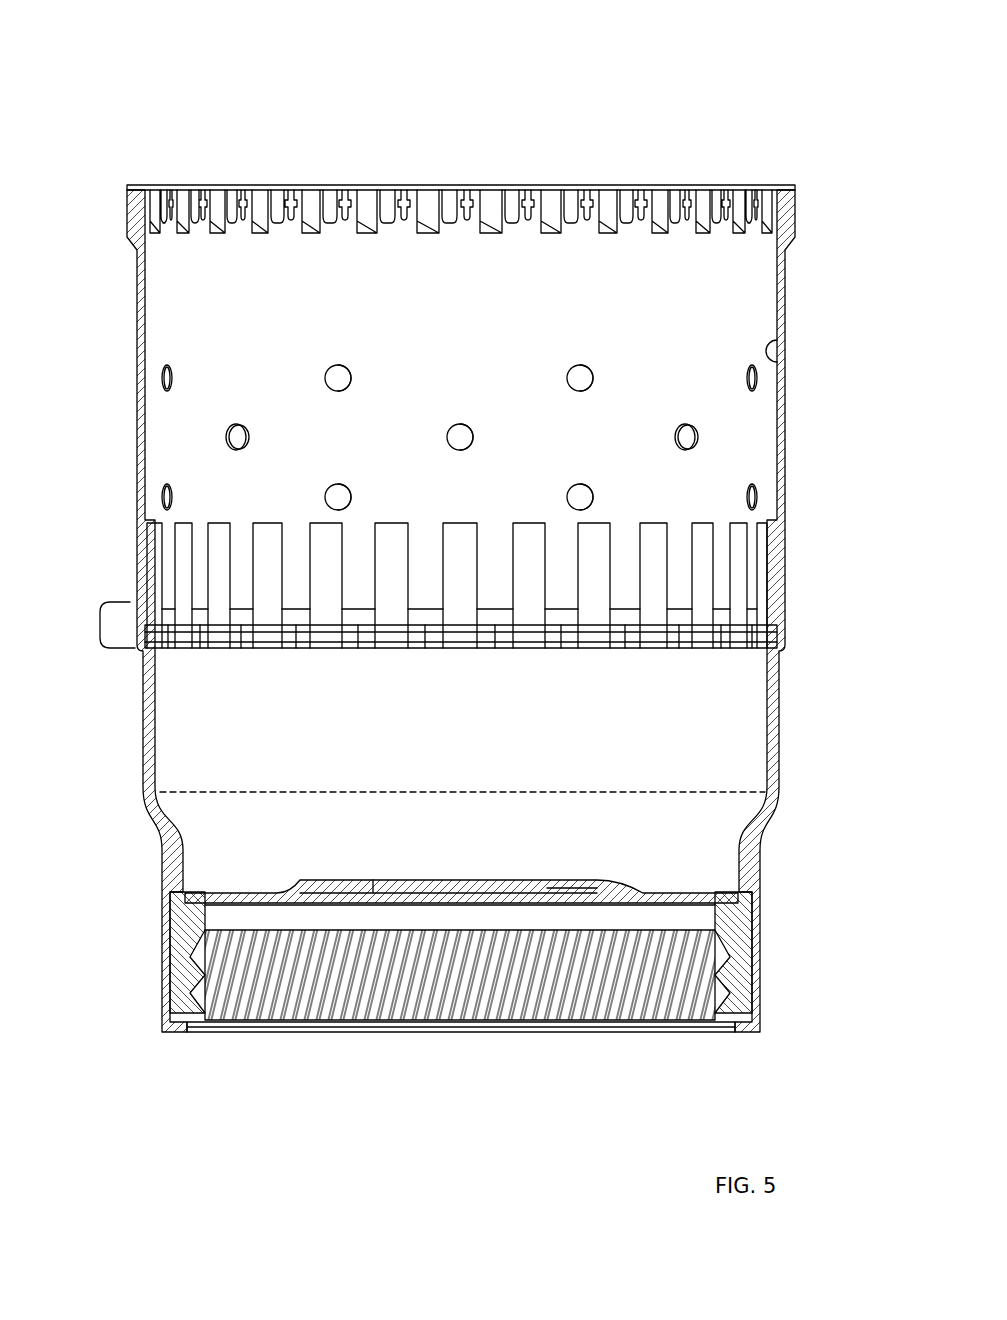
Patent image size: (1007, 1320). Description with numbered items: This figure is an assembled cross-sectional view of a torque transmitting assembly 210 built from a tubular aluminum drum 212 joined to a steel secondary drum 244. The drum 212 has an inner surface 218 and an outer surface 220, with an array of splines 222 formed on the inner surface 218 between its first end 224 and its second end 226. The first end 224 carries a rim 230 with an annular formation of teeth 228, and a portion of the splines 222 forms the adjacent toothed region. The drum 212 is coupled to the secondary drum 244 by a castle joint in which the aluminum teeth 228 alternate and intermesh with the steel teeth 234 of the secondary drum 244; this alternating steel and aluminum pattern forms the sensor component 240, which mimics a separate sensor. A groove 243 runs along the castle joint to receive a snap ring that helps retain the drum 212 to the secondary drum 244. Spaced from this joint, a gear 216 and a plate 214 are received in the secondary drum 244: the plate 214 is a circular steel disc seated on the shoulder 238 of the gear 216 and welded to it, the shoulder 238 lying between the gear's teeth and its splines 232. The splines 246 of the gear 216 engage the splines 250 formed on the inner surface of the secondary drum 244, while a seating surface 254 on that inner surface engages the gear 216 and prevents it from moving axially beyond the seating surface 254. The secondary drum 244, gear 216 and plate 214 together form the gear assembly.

The torque transmitting assembly 210 is at (106, 46).
The drum 212 is at (800, 323).
The plate 214 is at (297, 883).
The gear 216 is at (581, 1035).
The inner surface 218 is at (777, 360).
The outer surface 220 is at (787, 395).
The splines 222 is at (698, 588).
The first end 224 is at (780, 646).
The second end 226 is at (782, 187).
The teeth 228 is at (240, 620).
The rim 230 is at (135, 648).
The splines 232 is at (337, 1005).
The teeth 234 is at (775, 532).
The shoulder 238 is at (722, 890).
The sensor component 240 is at (100, 625).
The groove 243 is at (465, 628).
The secondary drum 244 is at (785, 717).
The splines 246 is at (762, 978).
The splines 250 is at (722, 962).
The seating surface 254 is at (195, 900).